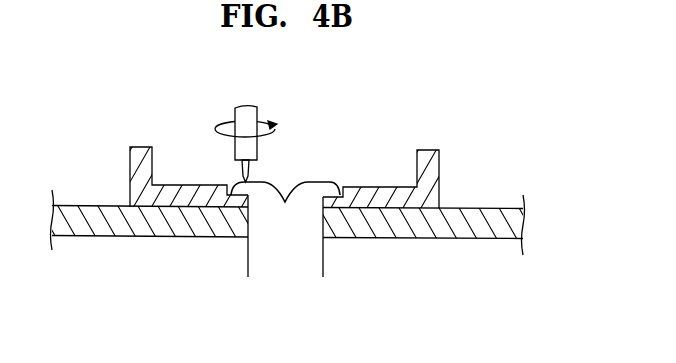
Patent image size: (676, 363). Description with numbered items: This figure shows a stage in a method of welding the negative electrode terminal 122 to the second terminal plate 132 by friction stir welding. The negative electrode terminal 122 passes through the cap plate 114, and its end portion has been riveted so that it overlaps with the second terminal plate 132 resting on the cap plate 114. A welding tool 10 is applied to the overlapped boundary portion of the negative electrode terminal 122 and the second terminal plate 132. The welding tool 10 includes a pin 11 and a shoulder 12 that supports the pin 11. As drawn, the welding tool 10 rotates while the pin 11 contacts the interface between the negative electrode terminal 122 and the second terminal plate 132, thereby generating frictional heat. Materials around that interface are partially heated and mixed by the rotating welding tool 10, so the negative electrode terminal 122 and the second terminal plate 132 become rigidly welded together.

The welding tool 10 is at (208, 138).
The pin 11 is at (248, 177).
The shoulder 12 is at (243, 163).
The cap plate 114 is at (476, 223).
The negative electrode terminal 122 is at (304, 252).
The second terminal plate 132 is at (430, 149).